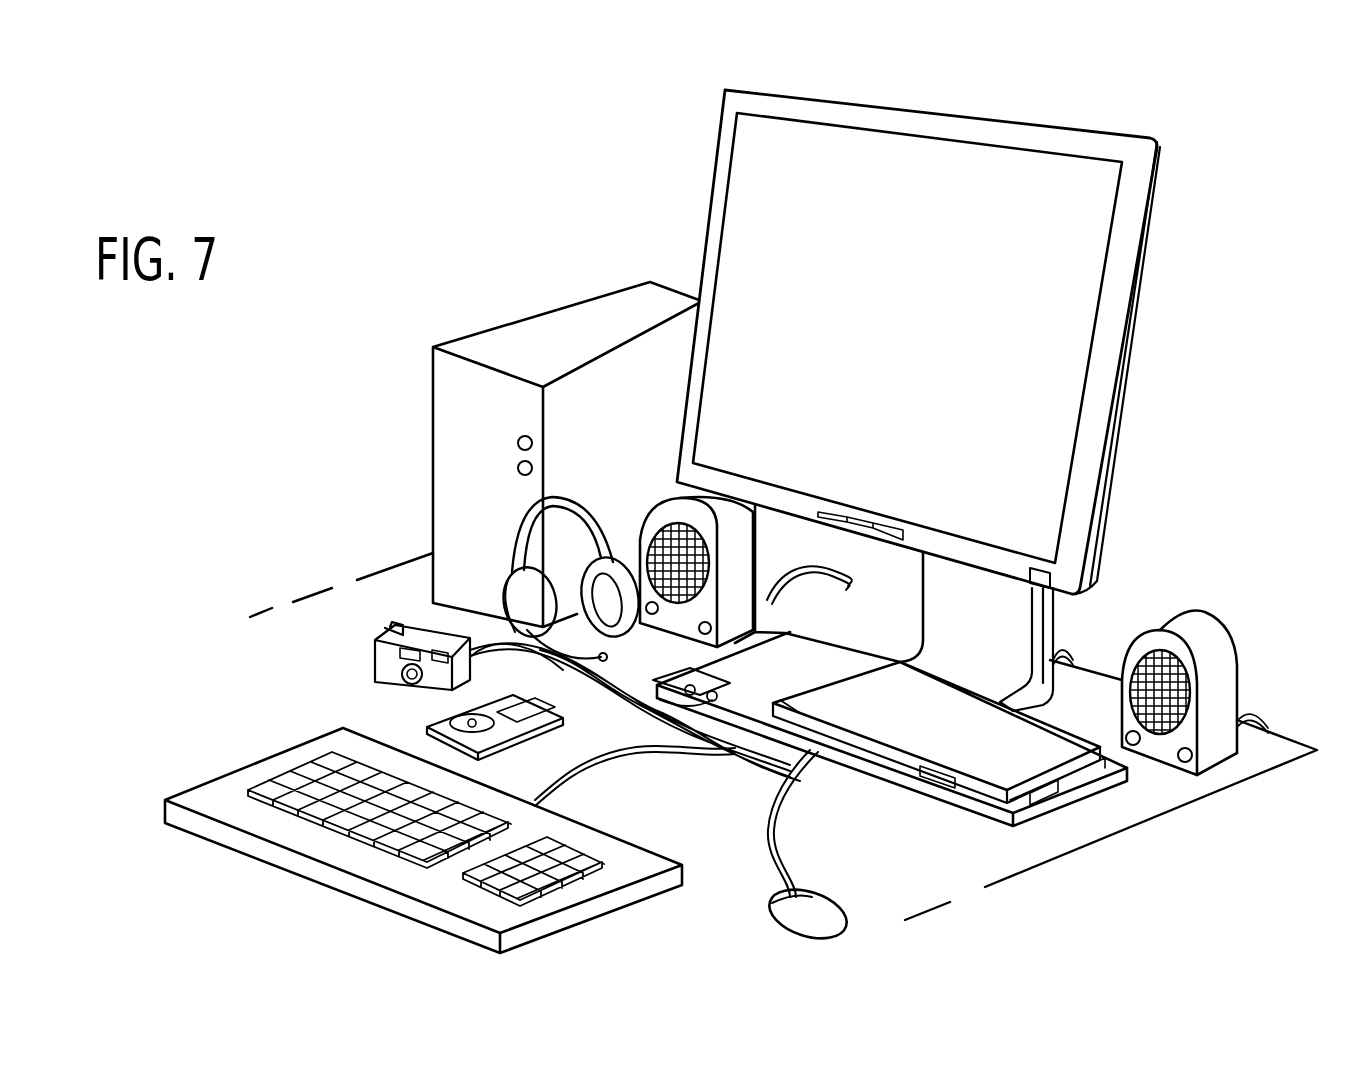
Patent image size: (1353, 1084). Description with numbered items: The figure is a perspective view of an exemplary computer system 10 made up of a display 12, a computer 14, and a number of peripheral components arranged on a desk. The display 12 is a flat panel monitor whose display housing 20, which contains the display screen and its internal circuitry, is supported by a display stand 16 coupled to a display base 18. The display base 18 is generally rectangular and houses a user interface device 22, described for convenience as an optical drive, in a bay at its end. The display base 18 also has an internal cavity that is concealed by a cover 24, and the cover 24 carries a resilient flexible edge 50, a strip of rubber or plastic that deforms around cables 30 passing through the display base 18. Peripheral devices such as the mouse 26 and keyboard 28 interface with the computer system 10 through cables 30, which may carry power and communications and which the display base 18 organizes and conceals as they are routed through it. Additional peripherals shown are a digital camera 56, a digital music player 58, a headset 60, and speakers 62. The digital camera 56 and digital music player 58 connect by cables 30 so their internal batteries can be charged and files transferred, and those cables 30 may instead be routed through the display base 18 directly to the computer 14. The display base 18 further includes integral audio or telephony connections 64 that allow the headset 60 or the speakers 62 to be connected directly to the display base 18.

The computer system 10 is at (464, 216).
The display 12 is at (1134, 83).
The computer 14 is at (450, 465).
The display stand 16 is at (1020, 612).
The display base 18 is at (987, 773).
The display housing 20 is at (1105, 330).
The user interface device 22 is at (1030, 790).
The cover 24 is at (888, 718).
The mouse 26 is at (833, 913).
The keyboard 28 is at (220, 792).
The cables 30 is at (623, 683).
The resilient flexible edge 50 is at (826, 760).
The digital camera 56 is at (378, 660).
The digital music player 58 is at (440, 722).
The headset 60 is at (656, 565).
The speakers 62 is at (1212, 633).
The integral audio or telephony connections 64 is at (725, 688).